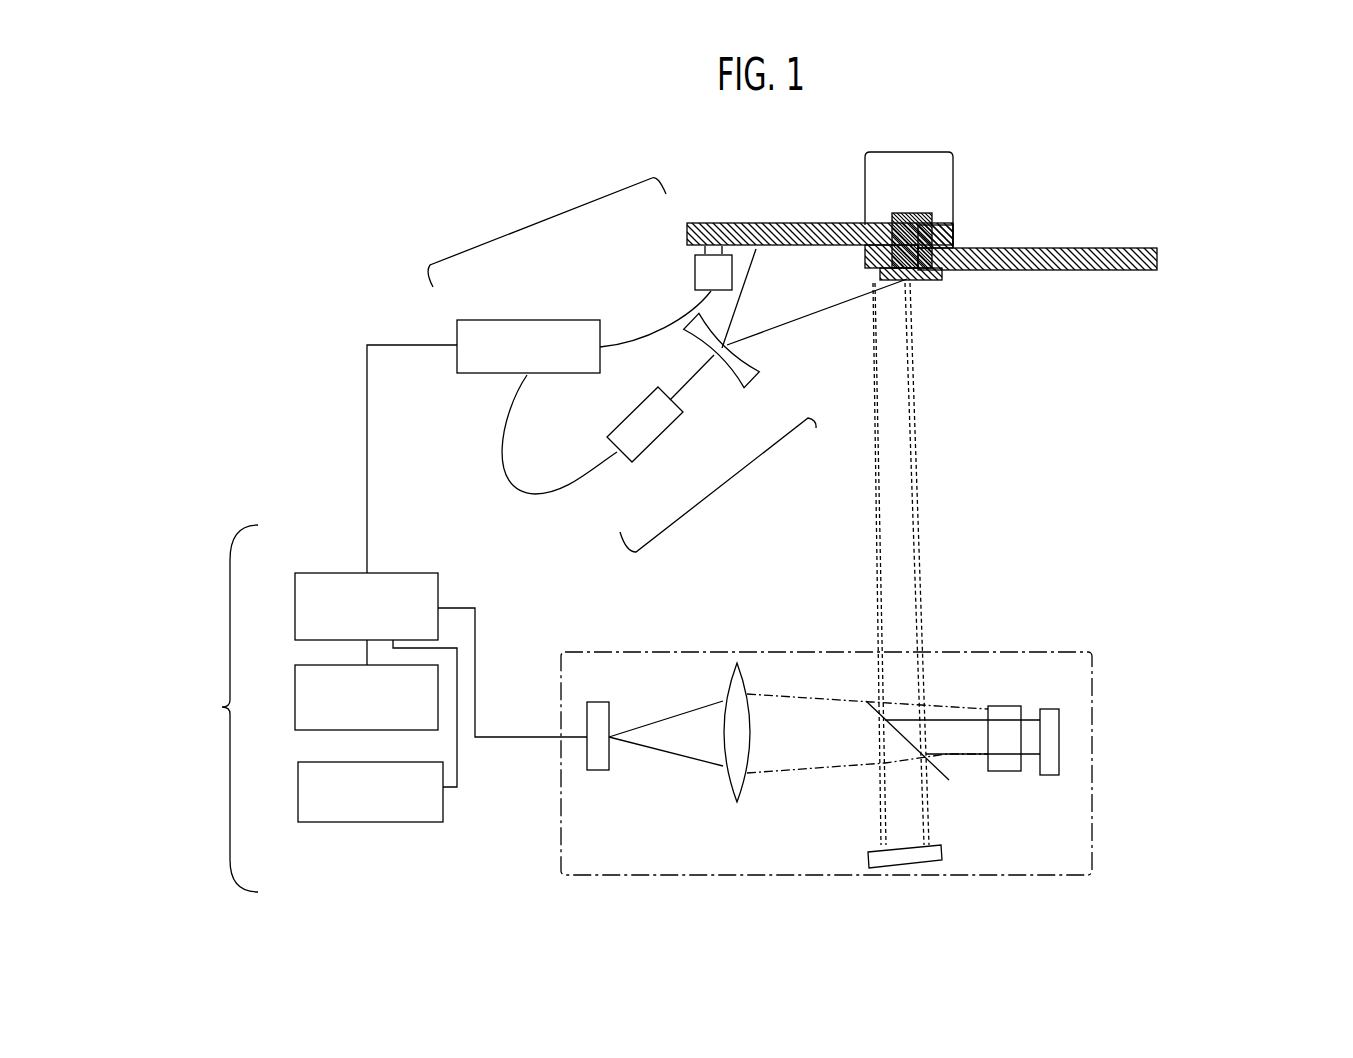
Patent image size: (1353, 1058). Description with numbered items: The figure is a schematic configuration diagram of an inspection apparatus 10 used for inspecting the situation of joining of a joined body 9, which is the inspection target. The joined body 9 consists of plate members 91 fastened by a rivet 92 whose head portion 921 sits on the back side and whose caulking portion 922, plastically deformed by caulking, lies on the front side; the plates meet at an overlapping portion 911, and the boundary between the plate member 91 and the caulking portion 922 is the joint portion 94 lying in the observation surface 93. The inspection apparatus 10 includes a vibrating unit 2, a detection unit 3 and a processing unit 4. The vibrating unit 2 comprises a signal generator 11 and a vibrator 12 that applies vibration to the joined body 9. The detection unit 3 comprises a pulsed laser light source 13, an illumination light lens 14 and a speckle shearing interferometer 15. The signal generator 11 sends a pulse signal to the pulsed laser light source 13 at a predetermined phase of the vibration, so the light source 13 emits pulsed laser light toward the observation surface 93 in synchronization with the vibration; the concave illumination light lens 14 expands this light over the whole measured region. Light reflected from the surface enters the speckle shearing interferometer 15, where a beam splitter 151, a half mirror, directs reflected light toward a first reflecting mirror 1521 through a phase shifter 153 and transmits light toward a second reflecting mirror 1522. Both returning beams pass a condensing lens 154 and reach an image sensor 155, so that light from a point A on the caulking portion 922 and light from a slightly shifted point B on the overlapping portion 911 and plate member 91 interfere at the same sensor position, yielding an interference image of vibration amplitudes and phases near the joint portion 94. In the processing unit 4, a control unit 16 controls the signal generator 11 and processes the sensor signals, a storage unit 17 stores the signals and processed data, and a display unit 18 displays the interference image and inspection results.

The vibrating unit 2 is at (541, 222).
The detection unit 3 is at (725, 483).
The processing unit 4 is at (225, 707).
The joined body 9 is at (1054, 306).
The inspection apparatus 10 is at (1228, 831).
The signal generator 11 is at (500, 343).
The vibrator 12 is at (695, 270).
The pulsed laser light source 13 is at (650, 425).
The illumination light lens 14 is at (740, 378).
The speckle shearing interferometer 15 is at (592, 648).
The control unit 16 is at (295, 573).
The storage unit 17 is at (295, 730).
The display unit 18 is at (298, 822).
The plate member 91 is at (797, 225).
The overlapping portion 911 is at (905, 152).
The rivet 92 is at (940, 280).
The head portion 921 is at (908, 212).
The caulking portion 922 is at (932, 283).
The observation surface 93 is at (1107, 273).
The joint portion 94 is at (945, 273).
The beam splitter 151 is at (873, 713).
The phase shifter 153 is at (1004, 706).
The condensing lens 154 is at (733, 683).
The image sensor 155 is at (599, 702).
The first reflecting mirror 1521 is at (1060, 742).
The second reflecting mirror 1522 is at (916, 859).
The point A is at (907, 282).
The point B is at (863, 268).